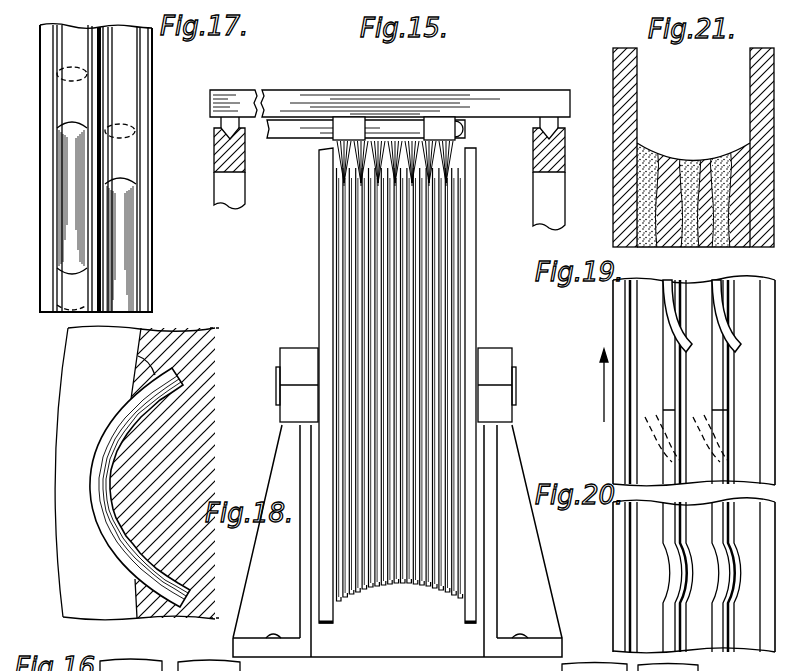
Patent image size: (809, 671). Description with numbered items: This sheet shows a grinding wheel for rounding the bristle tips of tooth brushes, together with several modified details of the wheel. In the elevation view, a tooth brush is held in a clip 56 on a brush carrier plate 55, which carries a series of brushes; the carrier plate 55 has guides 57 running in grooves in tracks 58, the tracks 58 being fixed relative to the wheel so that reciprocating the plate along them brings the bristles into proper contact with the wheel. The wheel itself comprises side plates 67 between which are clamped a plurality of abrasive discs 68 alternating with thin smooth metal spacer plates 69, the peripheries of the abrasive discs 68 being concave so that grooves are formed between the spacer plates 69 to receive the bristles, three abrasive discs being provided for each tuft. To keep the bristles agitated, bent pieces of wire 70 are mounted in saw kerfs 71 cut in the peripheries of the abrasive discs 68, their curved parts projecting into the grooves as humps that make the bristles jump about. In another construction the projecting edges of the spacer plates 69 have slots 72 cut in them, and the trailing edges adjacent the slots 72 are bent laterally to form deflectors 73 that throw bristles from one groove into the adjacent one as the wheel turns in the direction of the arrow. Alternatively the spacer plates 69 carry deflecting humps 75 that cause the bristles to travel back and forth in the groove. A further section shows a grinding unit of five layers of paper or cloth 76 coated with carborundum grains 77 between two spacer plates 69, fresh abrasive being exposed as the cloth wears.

In FIG. 15, the brush carrier plate 55 is at (296, 80).
In FIG. 15, the clip 56 is at (442, 128).
In FIG. 15, the guide 57 is at (551, 127).
In FIG. 15, the track 58 is at (571, 173).
In FIG. 15, the side plate 67 is at (321, 317).
In FIG. 18, the abrasive disc 68 is at (173, 328).
In FIG. 17, the spacer plate 69 is at (148, 97).
In FIG. 18, the spacer plate 69 is at (70, 413).
In FIG. 21, the spacer plate 69 is at (630, 117).
In FIG. 19, the spacer plate 69 is at (668, 283).
In FIG. 20, the spacer plate 69 is at (668, 522).
In FIG. 17, the bent piece of wire 70 is at (125, 238).
In FIG. 18, the bent piece of wire 70 is at (91, 494).
In FIG. 18, the saw kerf 71 is at (138, 356).
In FIG. 19, the slot 72 is at (717, 392).
In FIG. 19, the deflector 73 is at (686, 332).
In FIG. 20, the deflecting hump 75 is at (724, 565).
In FIG. 21, the layer of paper or cloth 76 is at (681, 158).
In FIG. 21, the carborundum grains 77 is at (697, 162).